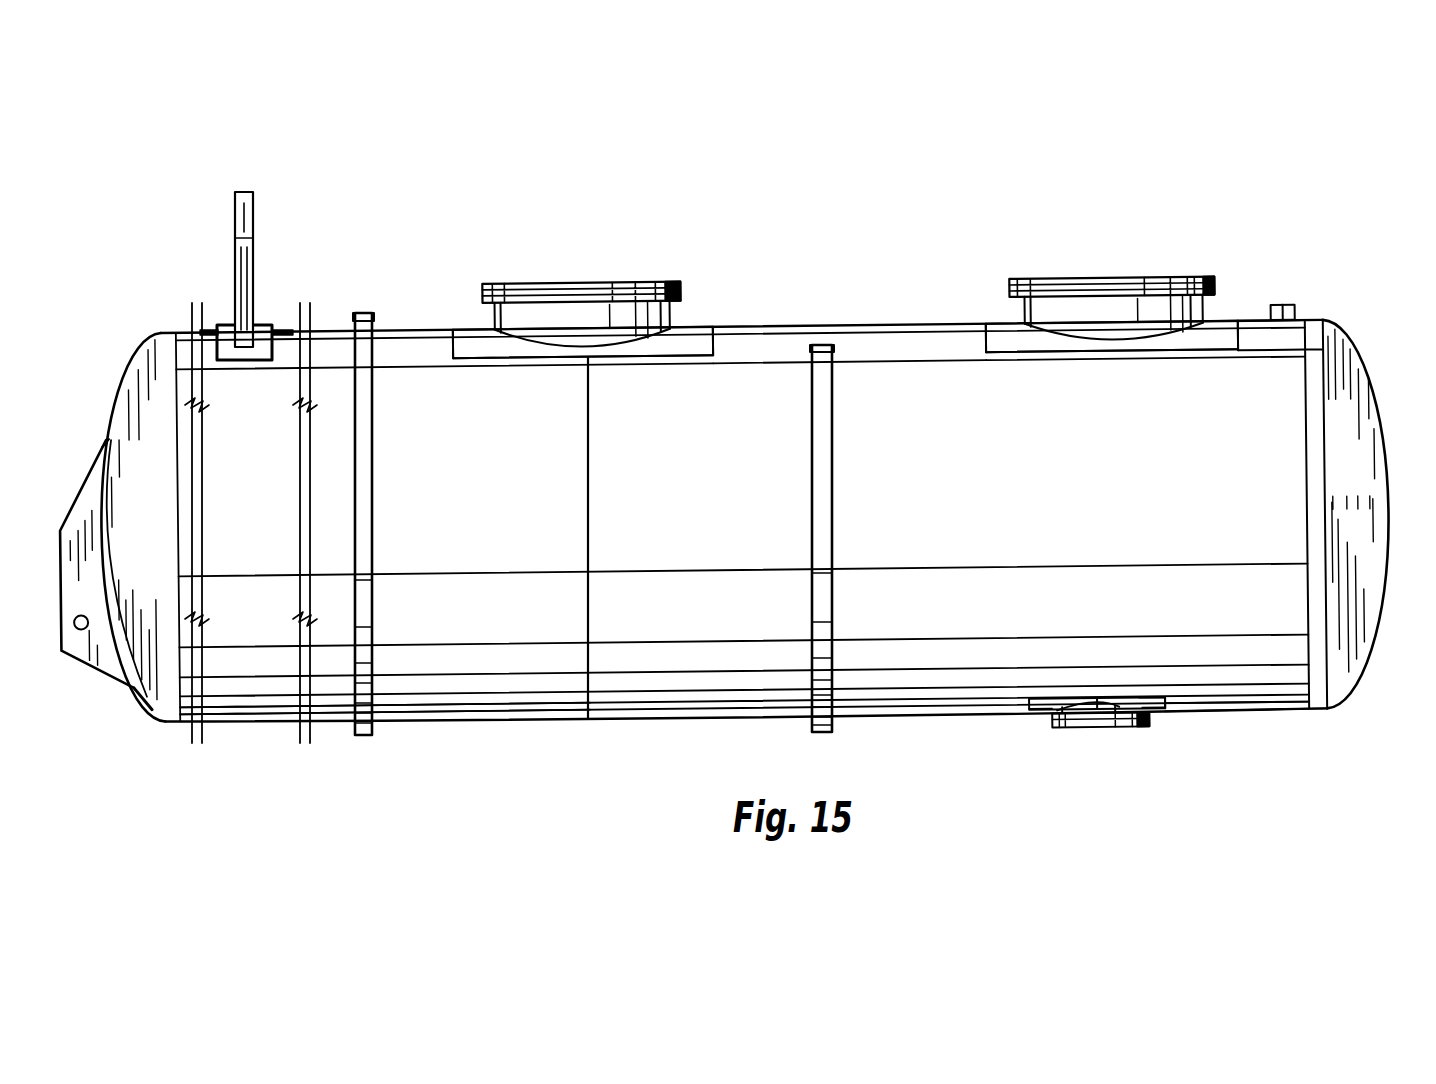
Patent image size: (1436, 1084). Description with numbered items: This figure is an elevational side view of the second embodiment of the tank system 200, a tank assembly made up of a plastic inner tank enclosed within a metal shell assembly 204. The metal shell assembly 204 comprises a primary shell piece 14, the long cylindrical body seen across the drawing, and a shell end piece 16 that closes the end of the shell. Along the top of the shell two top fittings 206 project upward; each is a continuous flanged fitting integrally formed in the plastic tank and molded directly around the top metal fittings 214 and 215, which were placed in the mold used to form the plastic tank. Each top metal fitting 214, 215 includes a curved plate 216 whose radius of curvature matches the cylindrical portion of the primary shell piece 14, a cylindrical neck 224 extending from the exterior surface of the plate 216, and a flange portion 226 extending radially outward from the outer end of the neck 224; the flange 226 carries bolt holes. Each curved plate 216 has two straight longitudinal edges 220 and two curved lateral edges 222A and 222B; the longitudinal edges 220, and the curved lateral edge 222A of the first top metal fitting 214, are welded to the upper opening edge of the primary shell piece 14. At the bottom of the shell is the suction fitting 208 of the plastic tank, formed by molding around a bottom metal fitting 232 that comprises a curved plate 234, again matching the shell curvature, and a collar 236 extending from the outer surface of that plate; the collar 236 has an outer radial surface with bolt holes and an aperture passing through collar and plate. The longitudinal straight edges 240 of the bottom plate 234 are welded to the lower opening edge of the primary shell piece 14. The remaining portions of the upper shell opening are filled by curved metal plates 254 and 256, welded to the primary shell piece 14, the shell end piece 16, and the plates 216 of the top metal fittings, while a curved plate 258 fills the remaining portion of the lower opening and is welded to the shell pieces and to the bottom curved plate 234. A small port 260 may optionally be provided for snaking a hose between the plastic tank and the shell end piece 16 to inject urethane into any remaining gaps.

The primary shell piece 14 is at (690, 693).
The shell end piece 16 is at (1350, 425).
The second embodiment of the tank system 200 is at (1160, 262).
The metal shell assembly 204 is at (513, 693).
The top fitting 206 is at (636, 283).
The suction fitting 208 is at (1143, 727).
The top metal fitting 214 is at (553, 348).
The top metal fitting 215 is at (1200, 339).
The curved plate 216 is at (647, 349).
The straight longitudinal edge 220 is at (500, 359).
The curved lateral edge 222A is at (455, 343).
The curved lateral edge 222B is at (723, 341).
The cylindrical neck 224 is at (542, 317).
The flange portion 226 is at (683, 301).
The bottom metal fitting 232 is at (1047, 710).
The curved plate 234 is at (1057, 700).
The collar 236 is at (1117, 707).
The longitudinal straight edge 240 is at (1137, 694).
The curved metal plate 254 is at (903, 348).
The curved metal plate 256 is at (1308, 322).
The curved plate 258 is at (1247, 707).
The small port 260 is at (1297, 304).